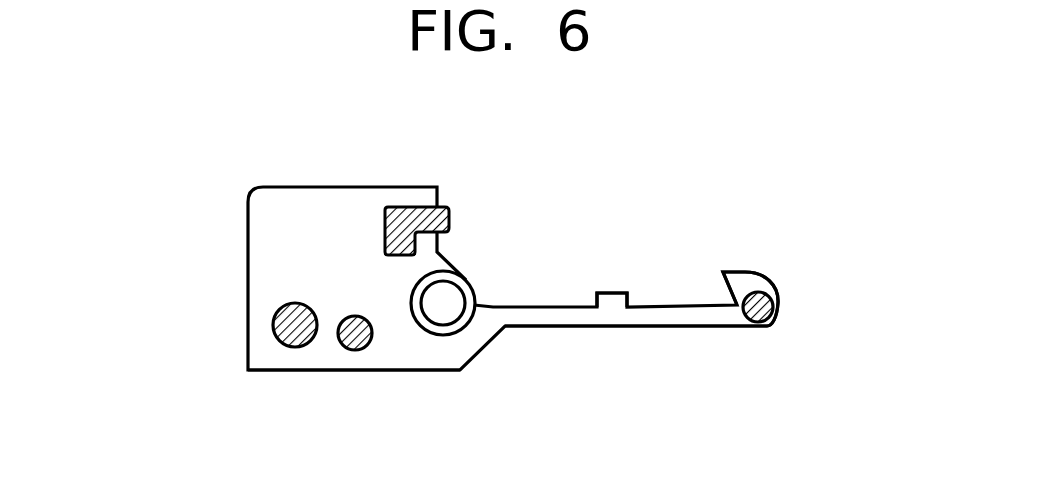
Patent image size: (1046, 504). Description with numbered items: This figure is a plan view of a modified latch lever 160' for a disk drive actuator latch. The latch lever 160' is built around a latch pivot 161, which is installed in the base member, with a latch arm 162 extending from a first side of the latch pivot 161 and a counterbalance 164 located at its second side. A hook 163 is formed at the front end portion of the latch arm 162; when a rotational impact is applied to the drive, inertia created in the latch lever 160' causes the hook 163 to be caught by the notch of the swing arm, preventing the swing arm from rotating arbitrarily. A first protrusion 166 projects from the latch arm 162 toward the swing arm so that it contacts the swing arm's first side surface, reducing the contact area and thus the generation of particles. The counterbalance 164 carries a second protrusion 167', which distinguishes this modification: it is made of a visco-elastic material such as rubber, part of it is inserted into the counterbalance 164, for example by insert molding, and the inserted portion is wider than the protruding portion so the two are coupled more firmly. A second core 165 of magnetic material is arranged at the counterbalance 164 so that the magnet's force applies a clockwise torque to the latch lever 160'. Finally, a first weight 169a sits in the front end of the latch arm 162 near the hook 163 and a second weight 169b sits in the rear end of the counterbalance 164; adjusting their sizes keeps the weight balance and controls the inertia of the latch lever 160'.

The latch lever 160' is at (513, 325).
The latch pivot 161 is at (443, 328).
The latch arm 162 is at (686, 315).
The hook 163 is at (742, 280).
The counterbalance 164 is at (392, 354).
The second core 165 is at (343, 345).
The first protrusion 166 is at (612, 300).
The second protrusion 167' is at (490, 209).
The first weight 169a is at (762, 323).
The second weight 169b is at (273, 320).